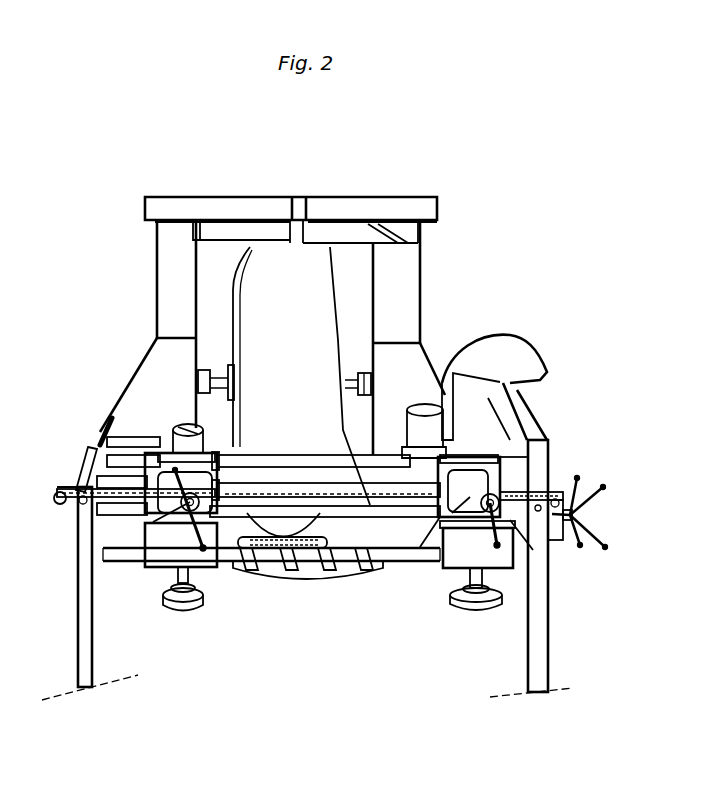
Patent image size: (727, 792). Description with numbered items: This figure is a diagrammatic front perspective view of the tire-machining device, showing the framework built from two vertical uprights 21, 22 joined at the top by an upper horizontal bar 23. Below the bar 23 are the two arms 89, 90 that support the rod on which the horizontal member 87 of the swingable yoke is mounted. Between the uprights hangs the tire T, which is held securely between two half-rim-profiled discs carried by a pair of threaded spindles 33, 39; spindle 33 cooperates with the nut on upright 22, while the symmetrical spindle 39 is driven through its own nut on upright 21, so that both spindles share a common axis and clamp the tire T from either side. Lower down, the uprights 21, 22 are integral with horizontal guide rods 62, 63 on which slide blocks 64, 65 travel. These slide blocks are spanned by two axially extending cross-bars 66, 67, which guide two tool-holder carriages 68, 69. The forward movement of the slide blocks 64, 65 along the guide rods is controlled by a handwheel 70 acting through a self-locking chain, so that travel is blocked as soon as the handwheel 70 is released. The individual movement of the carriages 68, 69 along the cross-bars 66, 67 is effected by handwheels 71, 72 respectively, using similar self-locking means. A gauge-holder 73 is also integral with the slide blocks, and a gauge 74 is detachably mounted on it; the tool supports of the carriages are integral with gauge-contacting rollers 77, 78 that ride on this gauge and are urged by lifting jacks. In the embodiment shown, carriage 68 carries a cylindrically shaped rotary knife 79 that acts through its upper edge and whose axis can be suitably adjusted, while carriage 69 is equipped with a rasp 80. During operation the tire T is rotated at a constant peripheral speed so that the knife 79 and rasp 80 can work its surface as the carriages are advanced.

The vertical upright 21 is at (400, 307).
The vertical upright 22 is at (178, 293).
The upper horizontal bar 23 is at (245, 213).
The threaded spindle 33 is at (217, 365).
The threaded spindle 39 is at (352, 374).
The horizontal guide rod 62 is at (103, 428).
The horizontal guide rod 63 is at (510, 476).
The slide block 64 is at (85, 475).
The slide block 65 is at (515, 490).
The cross-bar 66 is at (370, 466).
The cross-bar 67 is at (310, 493).
The tool-holder carriage 68 is at (170, 500).
The tool-holder carriage 69 is at (445, 528).
The handwheel 70 is at (600, 535).
The handwheel 71 is at (181, 545).
The handwheel 72 is at (492, 562).
The gauge-holder 73 is at (295, 560).
The gauge 74 is at (345, 572).
The gauge-contacting roller 77 is at (184, 608).
The gauge-contacting roller 78 is at (475, 610).
The rotary knife 79 is at (180, 425).
The rasp 80 is at (440, 386).
The horizontal member 87 is at (360, 246).
The arm 89 is at (195, 228).
The arm 90 is at (405, 234).
The tire T is at (300, 305).